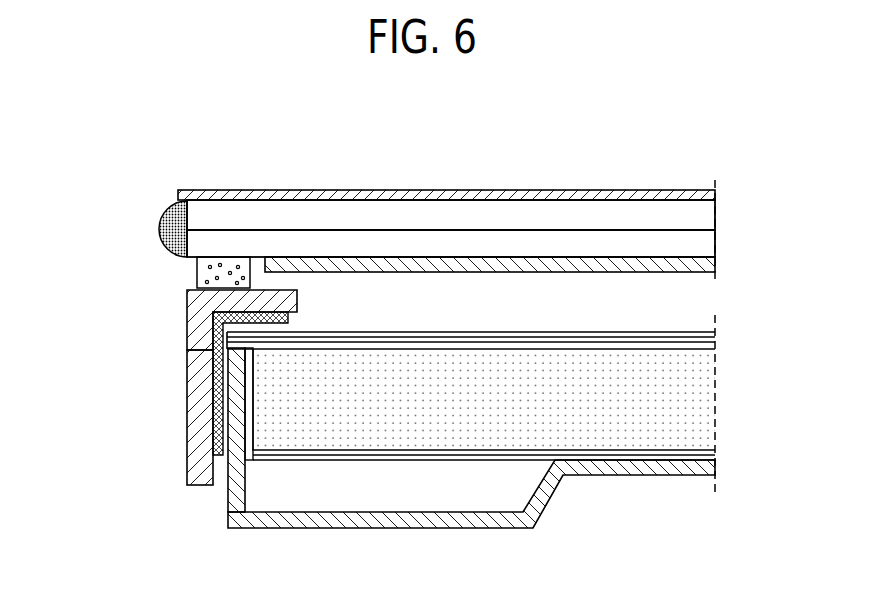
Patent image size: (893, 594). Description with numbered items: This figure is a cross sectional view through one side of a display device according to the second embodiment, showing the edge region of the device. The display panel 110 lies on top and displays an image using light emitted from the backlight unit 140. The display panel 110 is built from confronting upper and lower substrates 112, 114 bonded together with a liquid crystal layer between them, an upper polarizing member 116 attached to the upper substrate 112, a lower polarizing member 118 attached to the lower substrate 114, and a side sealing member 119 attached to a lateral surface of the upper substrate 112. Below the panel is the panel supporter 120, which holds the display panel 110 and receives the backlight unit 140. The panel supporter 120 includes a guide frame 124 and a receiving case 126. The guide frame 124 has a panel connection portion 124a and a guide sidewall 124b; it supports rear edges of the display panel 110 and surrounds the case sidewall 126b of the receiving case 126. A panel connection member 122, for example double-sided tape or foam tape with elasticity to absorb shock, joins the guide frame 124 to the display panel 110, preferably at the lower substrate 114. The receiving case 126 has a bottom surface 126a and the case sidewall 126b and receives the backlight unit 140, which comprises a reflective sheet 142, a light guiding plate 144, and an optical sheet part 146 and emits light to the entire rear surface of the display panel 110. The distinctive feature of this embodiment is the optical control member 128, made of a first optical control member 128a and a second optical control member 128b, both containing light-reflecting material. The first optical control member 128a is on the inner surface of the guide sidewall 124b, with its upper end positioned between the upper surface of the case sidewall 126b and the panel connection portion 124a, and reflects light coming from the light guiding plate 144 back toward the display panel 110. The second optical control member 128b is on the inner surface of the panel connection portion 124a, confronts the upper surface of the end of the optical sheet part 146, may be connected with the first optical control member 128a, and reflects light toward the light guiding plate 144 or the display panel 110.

The display panel 110 is at (520, 138).
The upper substrate 112 is at (364, 210).
The lower substrate 114 is at (441, 243).
The upper polarizing member 116 is at (289, 190).
The lower polarizing member 118 is at (493, 263).
The side sealing member 119 is at (151, 228).
The panel supporter 120 is at (70, 267).
The panel connection member 122 is at (208, 274).
The guide frame 124 is at (122, 298).
The panel connection portion 124a is at (245, 302).
The guide sidewall 124b is at (202, 328).
The receiving case 126 is at (122, 453).
The bottom surface 126a is at (350, 522).
The case sidewall 126b is at (236, 465).
The optical control member 128 is at (122, 363).
The first optical control member 128a is at (212, 393).
The second optical control member 128b is at (252, 322).
The backlight unit 140 is at (800, 333).
The reflective sheet 142 is at (705, 457).
The light guiding plate 144 is at (705, 395).
The optical sheet part 146 is at (717, 330).